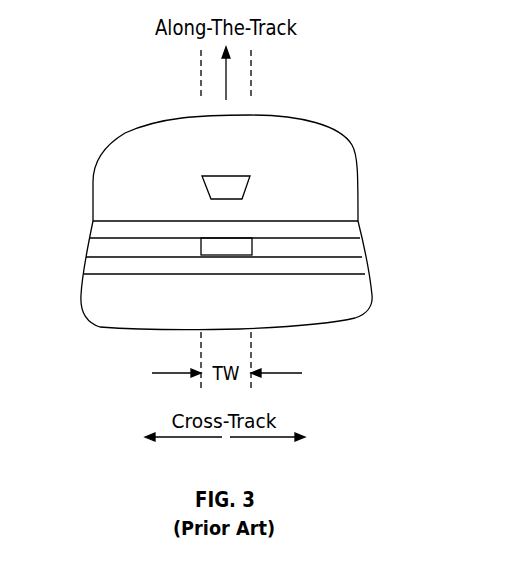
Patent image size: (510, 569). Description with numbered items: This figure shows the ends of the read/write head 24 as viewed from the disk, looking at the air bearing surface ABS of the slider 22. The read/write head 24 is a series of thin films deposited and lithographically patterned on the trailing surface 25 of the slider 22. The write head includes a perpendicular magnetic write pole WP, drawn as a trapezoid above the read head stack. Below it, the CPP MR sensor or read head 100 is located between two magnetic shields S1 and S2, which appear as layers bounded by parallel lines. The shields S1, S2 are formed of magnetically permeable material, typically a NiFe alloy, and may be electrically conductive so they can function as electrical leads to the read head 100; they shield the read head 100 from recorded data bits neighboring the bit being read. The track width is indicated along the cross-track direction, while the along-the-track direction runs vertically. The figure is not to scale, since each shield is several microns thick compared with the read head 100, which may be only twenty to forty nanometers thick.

The slider 22 is at (102, 326).
The read/write head 24 is at (48, 175).
The trailing surface 25 is at (88, 271).
The read head 100 is at (243, 249).
The first magnetic shield S1 is at (134, 275).
The second magnetic shield S2 is at (353, 229).
The write pole WP is at (248, 186).
The air bearing surface ABS is at (140, 142).